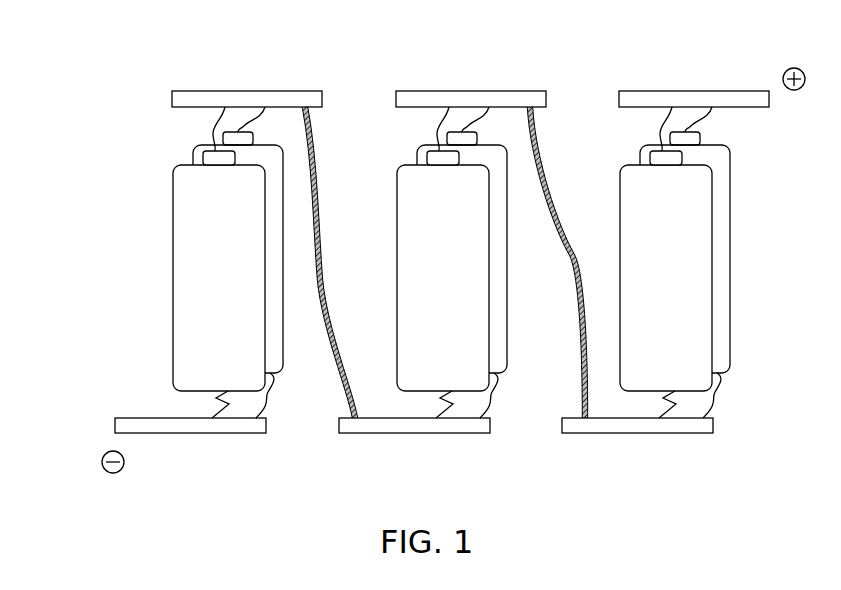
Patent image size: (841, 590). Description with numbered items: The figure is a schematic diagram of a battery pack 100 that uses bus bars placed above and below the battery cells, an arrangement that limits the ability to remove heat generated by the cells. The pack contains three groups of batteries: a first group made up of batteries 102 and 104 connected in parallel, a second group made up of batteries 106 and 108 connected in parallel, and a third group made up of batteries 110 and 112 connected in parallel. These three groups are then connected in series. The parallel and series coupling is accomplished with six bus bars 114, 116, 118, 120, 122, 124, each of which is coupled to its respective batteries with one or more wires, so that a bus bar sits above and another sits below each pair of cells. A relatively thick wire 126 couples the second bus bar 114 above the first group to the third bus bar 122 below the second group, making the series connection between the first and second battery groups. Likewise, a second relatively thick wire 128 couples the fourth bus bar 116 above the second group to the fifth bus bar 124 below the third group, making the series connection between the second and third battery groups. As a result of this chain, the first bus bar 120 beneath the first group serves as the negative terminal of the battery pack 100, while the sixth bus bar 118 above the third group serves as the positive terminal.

The battery pack 100 is at (108, 57).
The battery 102 is at (173, 190).
The battery 104 is at (190, 153).
The battery 106 is at (413, 291).
The battery 108 is at (399, 136).
The battery 110 is at (636, 291).
The battery 112 is at (622, 136).
The second bus bar 114 is at (284, 91).
The fourth bus bar 116 is at (472, 68).
The sixth bus bar 118 is at (694, 68).
The first bus bar 120 is at (190, 434).
The third bus bar 122 is at (414, 459).
The fifth bus bar 124 is at (637, 459).
The relatively thick wire 126 is at (320, 279).
The second relatively thick wire 128 is at (578, 270).